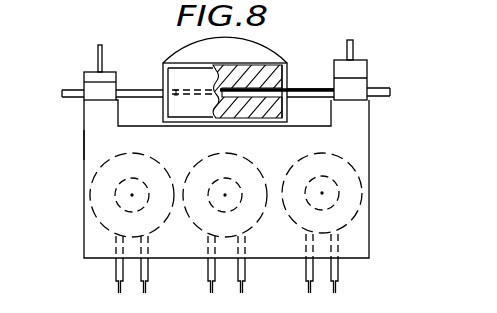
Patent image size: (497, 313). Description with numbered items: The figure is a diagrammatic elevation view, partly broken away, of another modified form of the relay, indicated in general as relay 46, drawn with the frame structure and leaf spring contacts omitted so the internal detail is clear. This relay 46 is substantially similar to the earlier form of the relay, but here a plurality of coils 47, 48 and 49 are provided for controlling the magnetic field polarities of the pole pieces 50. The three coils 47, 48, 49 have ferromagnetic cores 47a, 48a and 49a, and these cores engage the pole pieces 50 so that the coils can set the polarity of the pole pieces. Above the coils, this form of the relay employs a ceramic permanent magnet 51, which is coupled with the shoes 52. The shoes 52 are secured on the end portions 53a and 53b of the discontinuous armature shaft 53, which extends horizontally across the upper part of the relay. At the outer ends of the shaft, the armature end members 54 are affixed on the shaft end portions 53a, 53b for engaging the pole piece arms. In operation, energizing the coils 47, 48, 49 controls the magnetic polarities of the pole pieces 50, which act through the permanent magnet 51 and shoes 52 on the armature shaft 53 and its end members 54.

The relay 46 is at (371, 127).
The coil 47 is at (338, 158).
The ferromagnetic core 47a is at (304, 212).
The coil 48 is at (203, 163).
The ferromagnetic core 48a is at (202, 212).
The coil 49 is at (124, 158).
The ferromagnetic core 49a is at (108, 212).
The pole pieces 50 is at (93, 142).
The ceramic permanent magnet 51 is at (196, 73).
The shoes 52 is at (200, 41).
The armature shaft 53 is at (134, 97).
The end portion 53a is at (307, 88).
The end portion 53b is at (145, 90).
The armature end members 54 is at (90, 81).